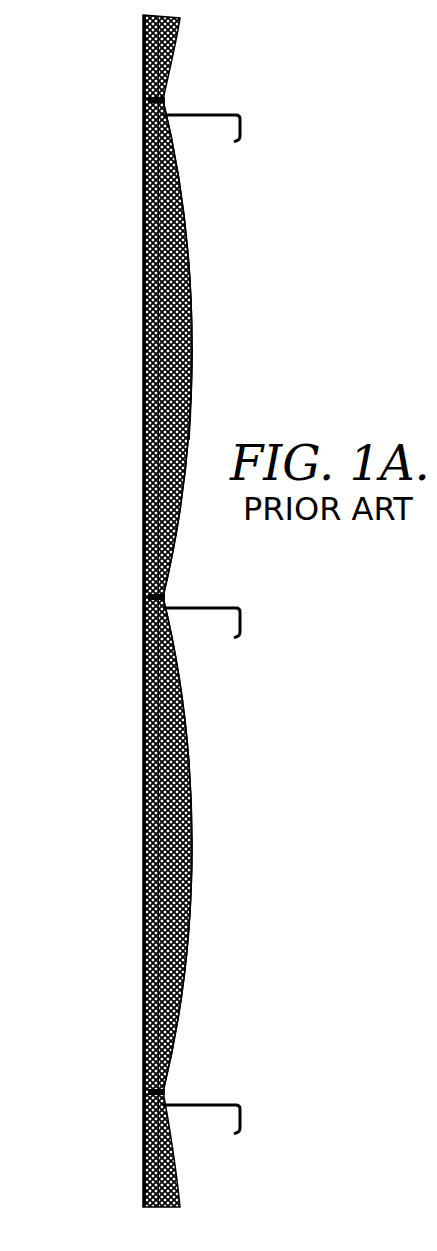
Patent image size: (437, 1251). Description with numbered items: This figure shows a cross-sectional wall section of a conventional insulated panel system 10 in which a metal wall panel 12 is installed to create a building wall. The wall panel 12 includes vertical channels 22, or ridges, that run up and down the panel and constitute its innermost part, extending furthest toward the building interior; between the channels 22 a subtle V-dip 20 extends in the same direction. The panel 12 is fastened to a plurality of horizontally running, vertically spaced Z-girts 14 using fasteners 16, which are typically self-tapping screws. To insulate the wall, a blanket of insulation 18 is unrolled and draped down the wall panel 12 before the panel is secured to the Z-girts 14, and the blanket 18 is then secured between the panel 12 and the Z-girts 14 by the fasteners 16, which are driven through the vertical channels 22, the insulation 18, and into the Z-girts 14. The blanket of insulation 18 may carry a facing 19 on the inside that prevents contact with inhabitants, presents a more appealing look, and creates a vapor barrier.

The conventional system 10 is at (53, 753).
The metal wall panel 12 is at (137, 397).
The Z-girt 14 is at (205, 114).
The fastener 16 is at (148, 100).
The blanket of insulation 18 is at (190, 300).
The facing 19 is at (192, 350).
The V-dip 20 is at (145, 168).
The vertical channel 22 is at (145, 222).